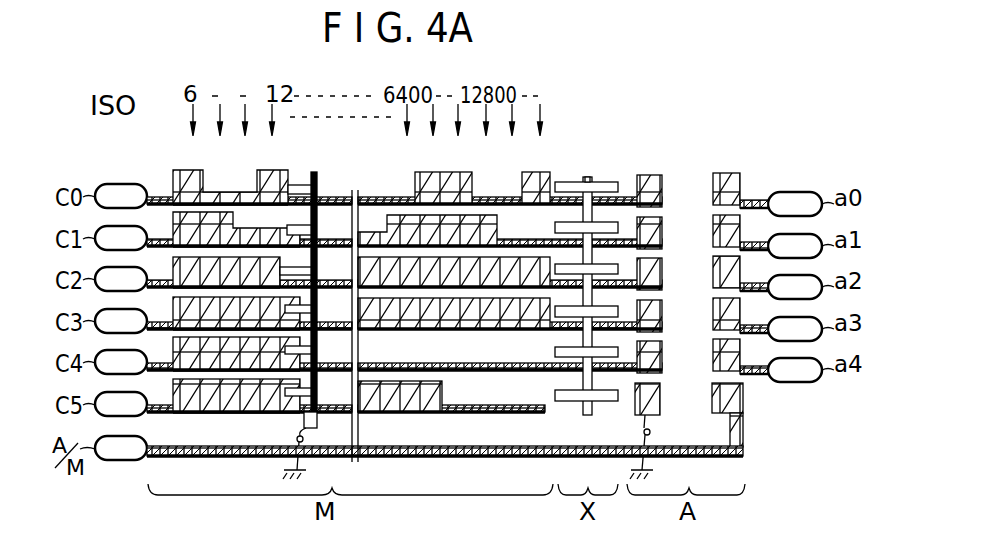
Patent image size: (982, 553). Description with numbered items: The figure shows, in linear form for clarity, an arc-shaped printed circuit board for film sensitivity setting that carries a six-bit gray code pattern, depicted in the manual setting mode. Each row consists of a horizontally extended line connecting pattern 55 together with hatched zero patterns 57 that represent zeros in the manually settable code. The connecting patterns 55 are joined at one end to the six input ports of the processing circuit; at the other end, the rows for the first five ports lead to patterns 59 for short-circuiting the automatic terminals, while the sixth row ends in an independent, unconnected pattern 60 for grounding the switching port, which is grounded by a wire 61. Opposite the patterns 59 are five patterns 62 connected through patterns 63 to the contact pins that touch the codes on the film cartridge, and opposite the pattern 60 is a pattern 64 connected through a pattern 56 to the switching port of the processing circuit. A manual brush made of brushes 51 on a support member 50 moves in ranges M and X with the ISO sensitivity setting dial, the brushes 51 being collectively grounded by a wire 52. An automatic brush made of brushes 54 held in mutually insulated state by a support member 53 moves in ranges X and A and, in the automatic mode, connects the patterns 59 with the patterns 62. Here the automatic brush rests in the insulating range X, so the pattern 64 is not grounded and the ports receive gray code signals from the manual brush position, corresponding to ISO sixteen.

The support member 50 is at (317, 187).
The brushes 51 is at (300, 184).
The wire 52 is at (300, 464).
The support member 53 is at (592, 171).
The brushes 54 is at (601, 181).
The line connecting pattern 55 is at (152, 196).
The pattern 56 is at (157, 446).
The "0" pattern 57 is at (227, 403).
The pattern 59 is at (661, 177).
The pattern 60 is at (660, 398).
The wire 61 is at (648, 472).
The pattern 62 is at (744, 200).
The pattern 63 is at (753, 204).
The pattern 64 is at (740, 398).